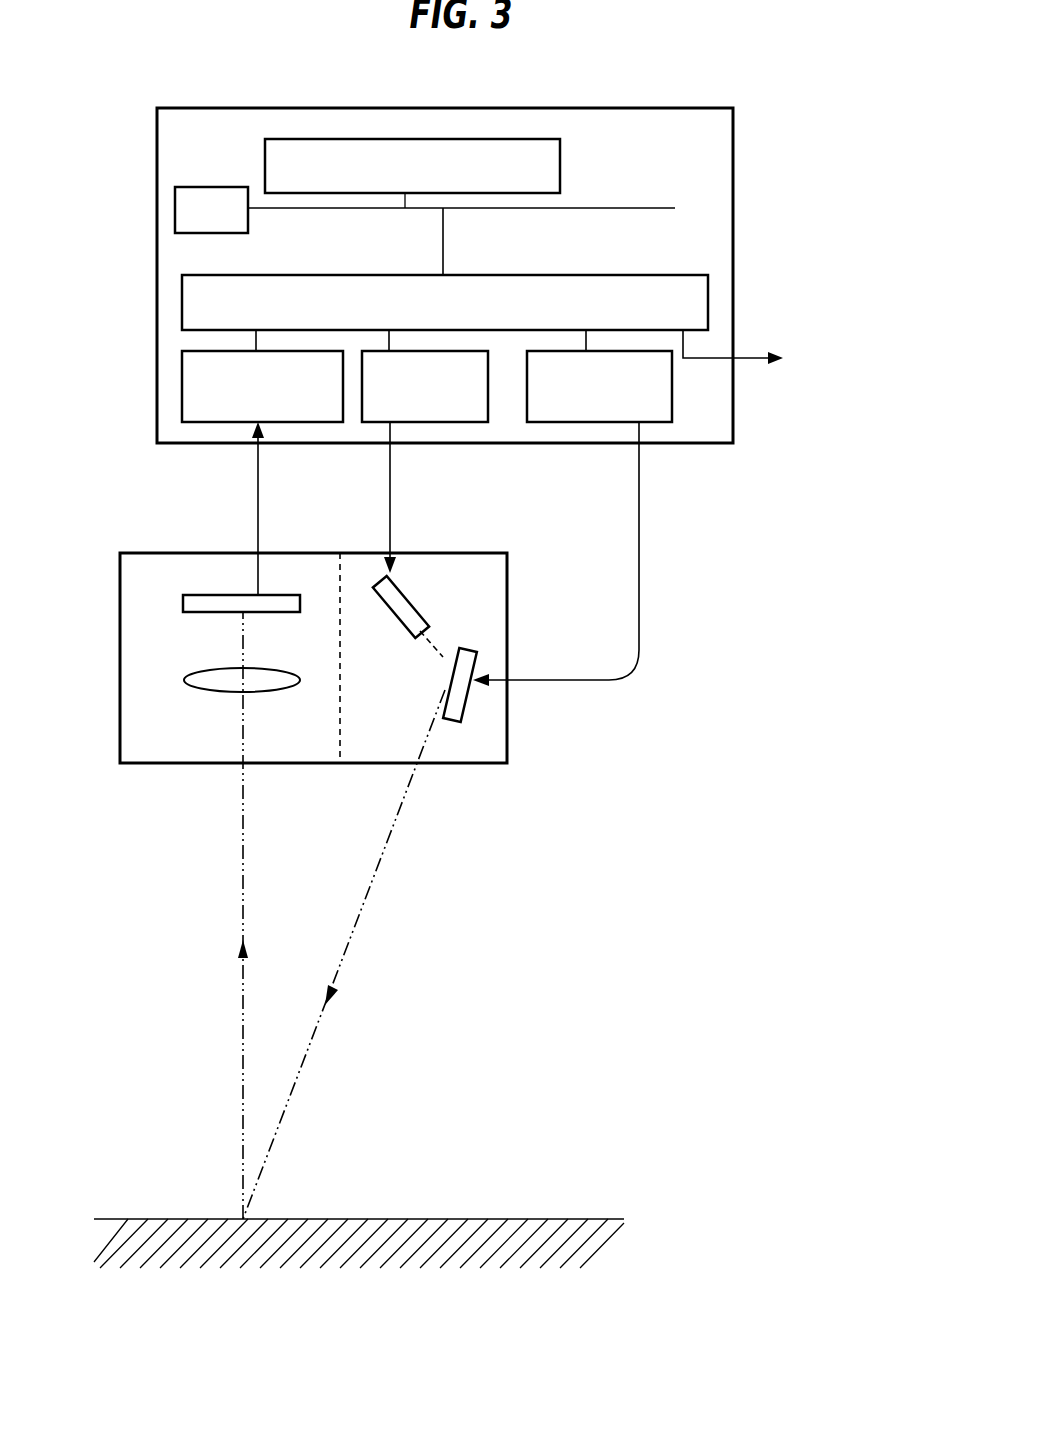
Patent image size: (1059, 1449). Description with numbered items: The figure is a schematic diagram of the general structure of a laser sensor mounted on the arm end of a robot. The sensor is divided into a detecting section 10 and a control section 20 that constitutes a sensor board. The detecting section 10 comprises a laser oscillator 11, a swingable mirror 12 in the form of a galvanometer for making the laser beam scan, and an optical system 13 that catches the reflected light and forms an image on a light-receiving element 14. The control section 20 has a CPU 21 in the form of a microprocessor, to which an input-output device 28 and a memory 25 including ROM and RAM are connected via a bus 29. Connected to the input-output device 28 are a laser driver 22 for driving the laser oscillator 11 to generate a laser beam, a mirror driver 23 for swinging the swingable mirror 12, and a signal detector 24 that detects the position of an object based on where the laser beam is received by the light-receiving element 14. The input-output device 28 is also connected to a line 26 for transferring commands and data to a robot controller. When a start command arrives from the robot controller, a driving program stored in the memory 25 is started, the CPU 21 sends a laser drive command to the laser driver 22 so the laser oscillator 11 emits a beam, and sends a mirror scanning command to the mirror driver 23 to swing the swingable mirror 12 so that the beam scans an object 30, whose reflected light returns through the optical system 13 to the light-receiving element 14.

The detecting section 10 is at (467, 763).
The laser oscillator 11 is at (418, 605).
The swingable mirror 12 is at (475, 708).
The optical system 13 is at (209, 691).
The light-receiving element 14 is at (201, 593).
The control section 20 is at (660, 104).
The CPU 21 is at (227, 187).
The laser driver 22 is at (452, 422).
The mirror driver 23 is at (663, 422).
The signal detector 24 is at (323, 422).
The memory 25 is at (562, 177).
The line 26 is at (748, 358).
The input-output device 28 is at (290, 275).
The bus 29 is at (637, 208).
The object 30 is at (443, 1218).